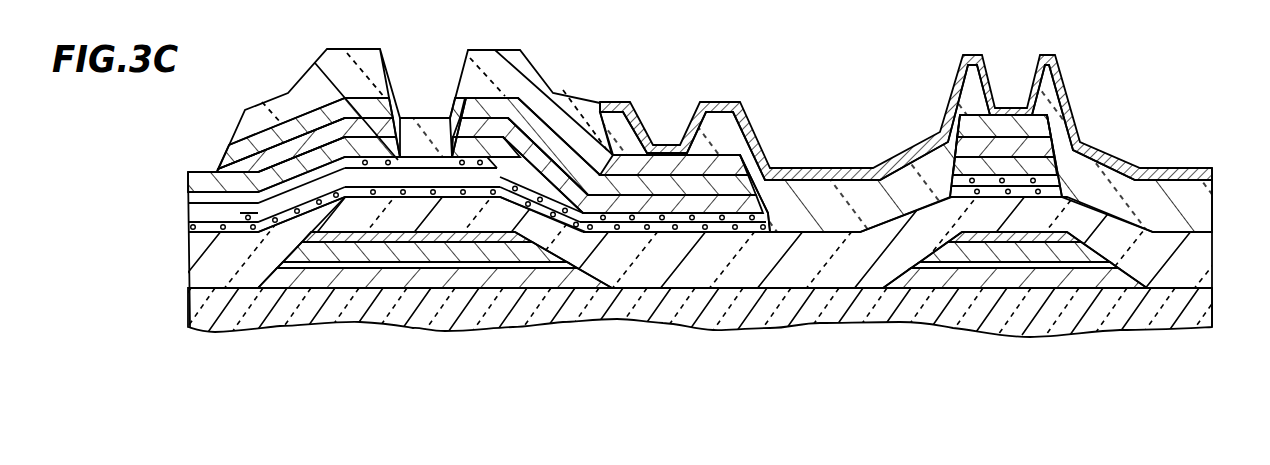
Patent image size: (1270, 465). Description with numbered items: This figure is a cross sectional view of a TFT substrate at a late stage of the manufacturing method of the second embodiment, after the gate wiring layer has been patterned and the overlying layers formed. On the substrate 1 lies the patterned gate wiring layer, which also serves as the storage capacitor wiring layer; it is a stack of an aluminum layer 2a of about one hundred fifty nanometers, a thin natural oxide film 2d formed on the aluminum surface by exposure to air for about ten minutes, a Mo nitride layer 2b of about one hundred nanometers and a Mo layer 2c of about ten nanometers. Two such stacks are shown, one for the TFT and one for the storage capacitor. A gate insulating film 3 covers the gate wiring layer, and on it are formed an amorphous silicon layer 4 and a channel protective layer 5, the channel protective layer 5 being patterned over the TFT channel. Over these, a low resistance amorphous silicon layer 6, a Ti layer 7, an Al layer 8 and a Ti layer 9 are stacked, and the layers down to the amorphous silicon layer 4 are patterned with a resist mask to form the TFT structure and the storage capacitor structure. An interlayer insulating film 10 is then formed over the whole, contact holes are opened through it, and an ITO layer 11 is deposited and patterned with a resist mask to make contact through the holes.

The substrate 1 is at (1200, 300).
The aluminum layer 2a is at (345, 280).
The Mo nitride layer 2b is at (415, 252).
The Mo layer 2c is at (445, 237).
The natural oxide film 2d is at (385, 265).
The gate insulating film 3 is at (1200, 262).
The amorphous silicon layer 4 is at (208, 233).
The channel protective layer 5 is at (460, 188).
The low resistance amorphous silicon layer 6 is at (230, 222).
The Ti layer 7 is at (228, 203).
The Al layer 8 is at (218, 171).
The Ti layer 9 is at (222, 168).
The interlayer insulating film 10 is at (1195, 210).
The ITO layer 11 is at (616, 98).